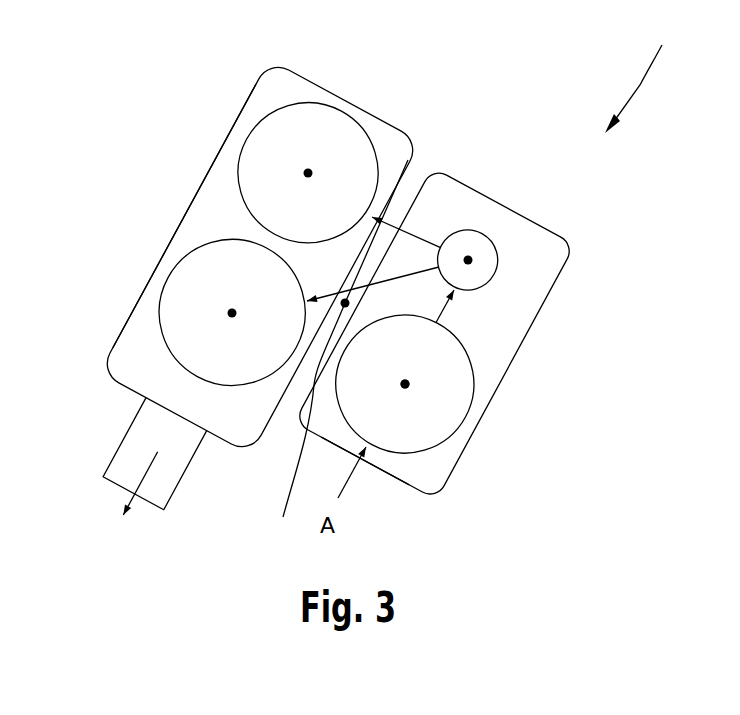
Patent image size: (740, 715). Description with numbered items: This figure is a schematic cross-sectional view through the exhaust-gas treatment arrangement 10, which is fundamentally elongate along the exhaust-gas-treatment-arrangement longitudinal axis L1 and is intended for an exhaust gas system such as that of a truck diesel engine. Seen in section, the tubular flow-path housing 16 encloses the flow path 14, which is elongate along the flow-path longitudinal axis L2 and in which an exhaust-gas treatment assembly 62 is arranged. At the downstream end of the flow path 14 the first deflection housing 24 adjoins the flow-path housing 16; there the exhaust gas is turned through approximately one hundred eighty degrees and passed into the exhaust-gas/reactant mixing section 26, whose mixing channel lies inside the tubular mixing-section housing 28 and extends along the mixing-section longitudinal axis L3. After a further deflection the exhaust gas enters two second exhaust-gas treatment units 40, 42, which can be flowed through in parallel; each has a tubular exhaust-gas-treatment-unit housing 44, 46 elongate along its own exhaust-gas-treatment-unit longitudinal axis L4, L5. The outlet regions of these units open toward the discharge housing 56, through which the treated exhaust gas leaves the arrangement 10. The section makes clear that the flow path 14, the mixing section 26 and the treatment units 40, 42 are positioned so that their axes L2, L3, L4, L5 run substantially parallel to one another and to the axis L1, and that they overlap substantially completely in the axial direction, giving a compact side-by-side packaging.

The exhaust-gas treatment arrangement 10 is at (651, 84).
The flow path 14 is at (448, 441).
The flow-path housing 16 is at (412, 454).
The first deflection housing 24 is at (523, 352).
The exhaust-gas/reactant mixing section 26 is at (502, 258).
The mixing-section housing 28 is at (476, 234).
The second exhaust-gas treatment unit 40 is at (319, 99).
The second exhaust-gas treatment unit 42 is at (170, 358).
The exhaust-gas-treatment-unit housing 44 is at (373, 143).
The exhaust-gas-treatment-unit housing 46 is at (160, 330).
The discharge housing 56 is at (190, 203).
The exhaust-gas treatment assembly 62 is at (452, 382).
The exhaust-gas-treatment-arrangement longitudinal axis L1 is at (337, 355).
The flow-path longitudinal axis L2 is at (405, 384).
The mixing-section longitudinal axis L3 is at (470, 258).
The exhaust-gas-treatment-unit longitudinal axis L4 is at (308, 173).
The exhaust-gas-treatment-unit longitudinal axis L5 is at (232, 313).